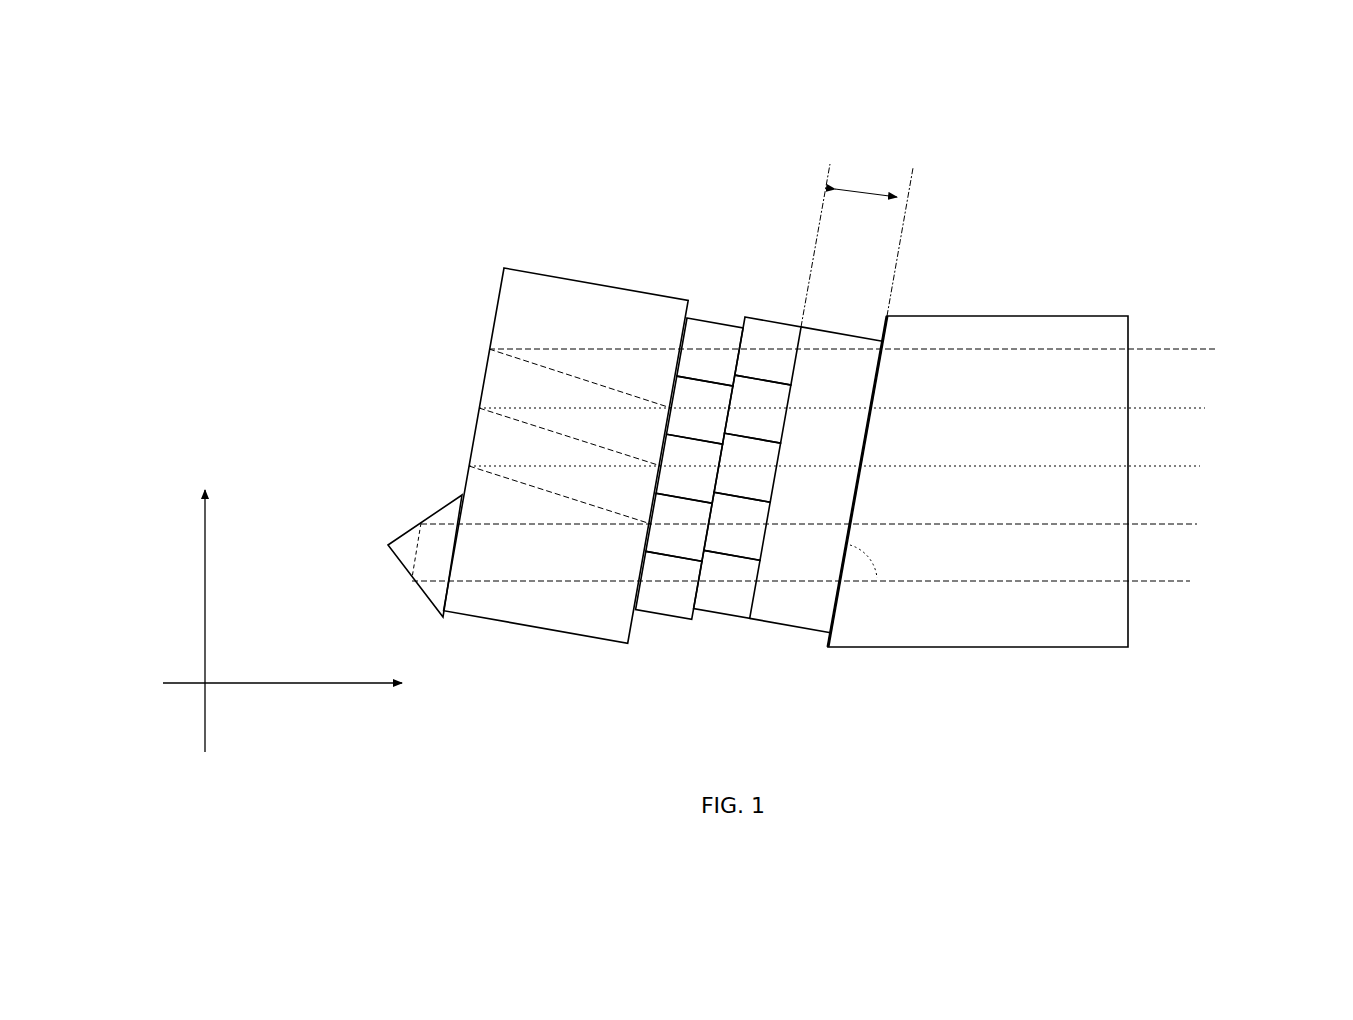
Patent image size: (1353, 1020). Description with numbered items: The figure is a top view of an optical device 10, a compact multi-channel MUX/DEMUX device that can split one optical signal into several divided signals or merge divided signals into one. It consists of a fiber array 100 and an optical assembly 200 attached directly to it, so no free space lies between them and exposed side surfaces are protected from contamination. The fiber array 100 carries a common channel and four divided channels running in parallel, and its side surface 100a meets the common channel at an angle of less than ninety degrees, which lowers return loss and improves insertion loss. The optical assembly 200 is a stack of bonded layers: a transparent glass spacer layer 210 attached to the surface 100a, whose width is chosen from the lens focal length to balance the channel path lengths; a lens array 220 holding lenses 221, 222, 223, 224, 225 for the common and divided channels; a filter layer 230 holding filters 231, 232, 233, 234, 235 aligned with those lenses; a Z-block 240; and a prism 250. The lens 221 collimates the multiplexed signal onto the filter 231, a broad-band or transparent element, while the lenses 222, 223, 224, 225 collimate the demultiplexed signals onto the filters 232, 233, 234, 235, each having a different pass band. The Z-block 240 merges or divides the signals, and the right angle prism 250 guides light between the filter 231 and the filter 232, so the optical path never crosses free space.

The optical device 10 is at (1236, 114).
The fiber array 100 is at (1033, 310).
The surface 100a is at (892, 329).
The optical assembly 200 is at (200, 135).
The spacer layer 210 is at (852, 328).
The lens array 220 is at (357, 135).
The lens 221 is at (733, 595).
The lens 222 is at (753, 532).
The lens 223 is at (748, 460).
The lens 224 is at (768, 405).
The lens 225 is at (781, 342).
The filter layer 230 is at (495, 135).
The filter 231 is at (657, 592).
The filter 232 is at (670, 540).
The filter 233 is at (667, 455).
The filter 234 is at (695, 405).
The filter 235 is at (704, 347).
The Z-block 240 is at (494, 298).
The prism 250 is at (398, 518).